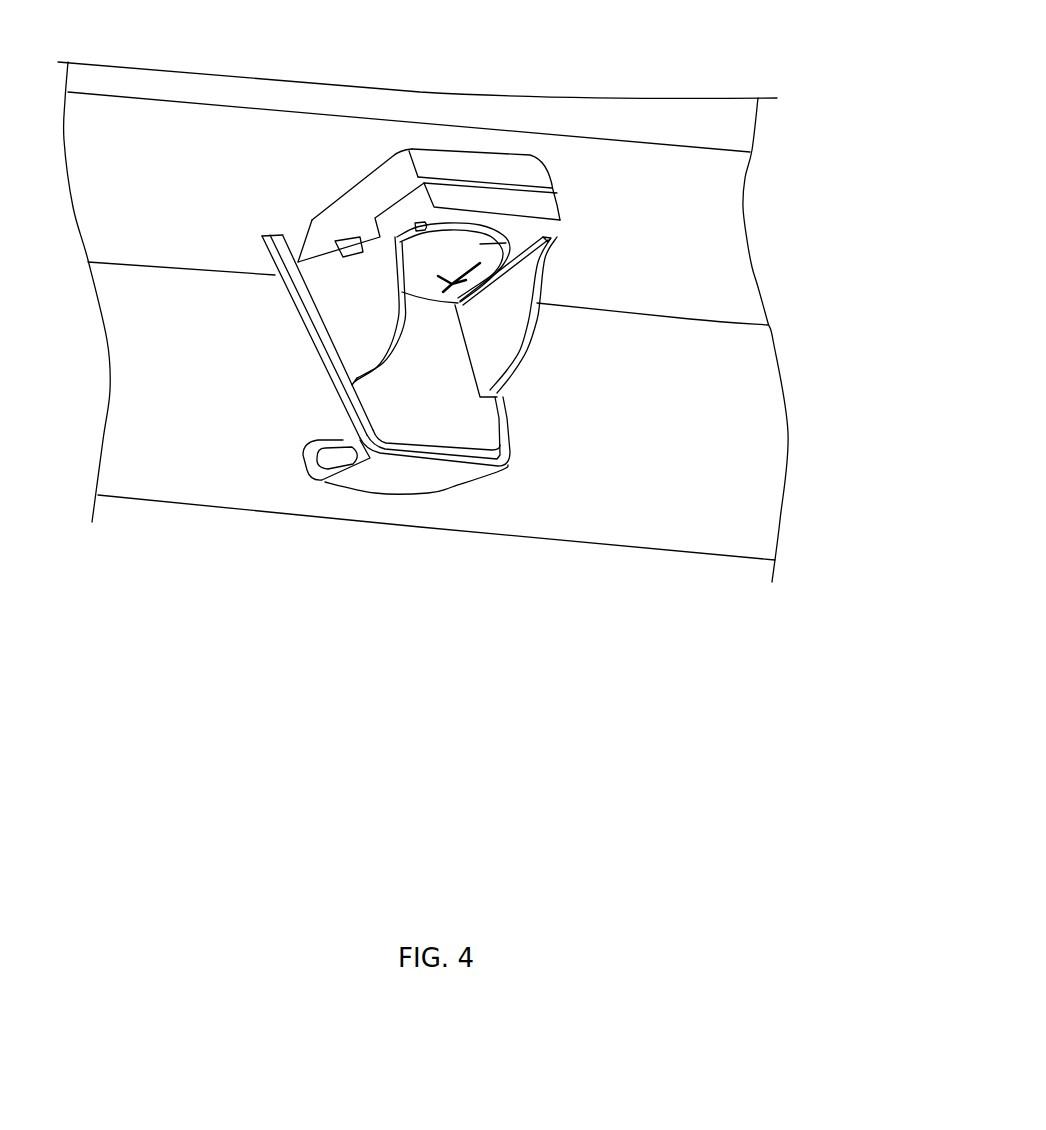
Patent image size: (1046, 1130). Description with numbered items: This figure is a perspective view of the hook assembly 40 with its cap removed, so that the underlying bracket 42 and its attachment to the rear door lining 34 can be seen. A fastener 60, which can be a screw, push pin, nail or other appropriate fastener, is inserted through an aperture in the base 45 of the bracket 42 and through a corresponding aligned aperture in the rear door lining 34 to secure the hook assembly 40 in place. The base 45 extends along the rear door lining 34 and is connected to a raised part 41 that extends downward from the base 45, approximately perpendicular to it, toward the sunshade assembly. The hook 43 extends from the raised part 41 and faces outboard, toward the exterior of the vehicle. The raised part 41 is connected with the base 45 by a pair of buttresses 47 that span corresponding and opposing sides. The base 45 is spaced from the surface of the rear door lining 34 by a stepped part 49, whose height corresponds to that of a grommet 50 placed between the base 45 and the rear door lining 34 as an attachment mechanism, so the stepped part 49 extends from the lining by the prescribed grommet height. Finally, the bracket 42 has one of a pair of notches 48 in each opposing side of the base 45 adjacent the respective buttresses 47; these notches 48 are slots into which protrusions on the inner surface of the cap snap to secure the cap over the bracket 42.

The rear door lining 34 is at (727, 289).
The hook assembly 40 is at (546, 445).
The raised part 41 is at (480, 425).
The bracket 42 is at (387, 474).
The hook 43 is at (322, 433).
The base 45 is at (505, 208).
The buttresses 47 is at (392, 332).
The notches 48 is at (366, 240).
The stepped part 49 is at (295, 248).
The grommet 50 is at (468, 168).
The fastener 60 is at (557, 238).